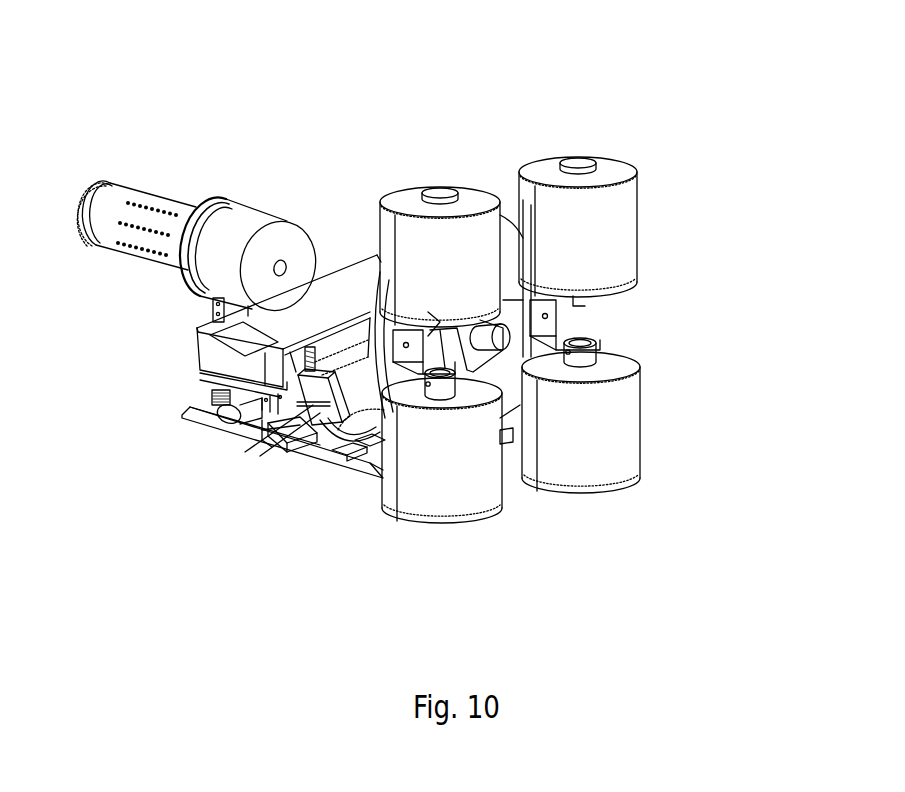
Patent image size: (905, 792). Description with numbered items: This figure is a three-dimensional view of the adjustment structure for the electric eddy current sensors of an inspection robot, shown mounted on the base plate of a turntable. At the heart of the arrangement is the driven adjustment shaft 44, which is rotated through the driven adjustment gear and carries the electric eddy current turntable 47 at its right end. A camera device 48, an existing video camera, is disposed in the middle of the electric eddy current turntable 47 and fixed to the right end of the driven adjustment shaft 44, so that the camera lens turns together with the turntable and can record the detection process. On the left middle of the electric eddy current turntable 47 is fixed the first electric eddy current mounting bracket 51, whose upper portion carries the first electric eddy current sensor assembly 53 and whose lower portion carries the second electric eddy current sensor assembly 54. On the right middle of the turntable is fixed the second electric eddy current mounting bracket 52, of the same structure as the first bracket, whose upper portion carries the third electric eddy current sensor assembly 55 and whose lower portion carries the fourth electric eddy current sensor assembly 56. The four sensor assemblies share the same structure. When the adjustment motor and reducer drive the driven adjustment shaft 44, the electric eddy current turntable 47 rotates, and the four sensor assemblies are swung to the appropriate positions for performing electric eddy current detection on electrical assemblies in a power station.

The driven adjustment shaft 44 is at (503, 335).
The electric eddy current turntable 47 is at (510, 235).
The camera device 48 is at (505, 316).
The first electric eddy current mounting bracket 51 is at (413, 380).
The second electric eddy current mounting bracket 52 is at (577, 352).
The first electric eddy current sensor assembly 53 is at (435, 245).
The second electric eddy current sensor assembly 54 is at (430, 450).
The third electric eddy current sensor assembly 55 is at (613, 190).
The fourth electric eddy current sensor assembly 56 is at (603, 452).